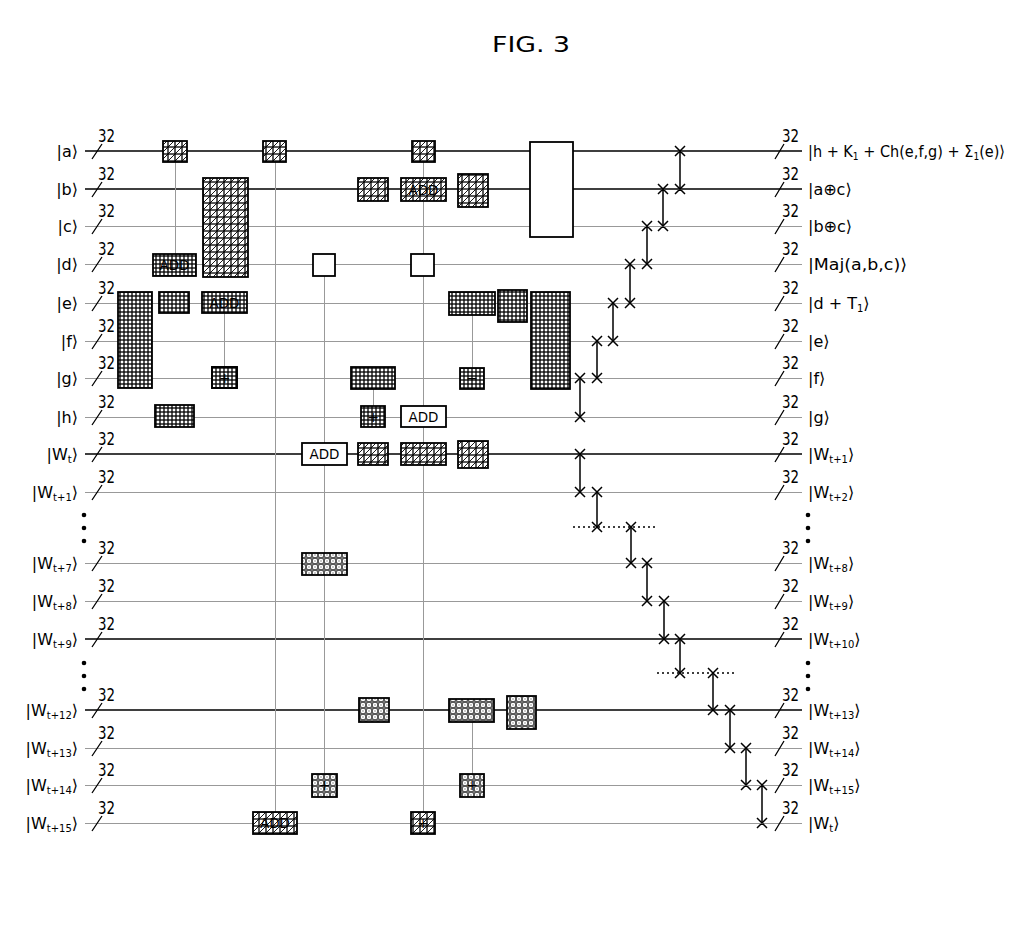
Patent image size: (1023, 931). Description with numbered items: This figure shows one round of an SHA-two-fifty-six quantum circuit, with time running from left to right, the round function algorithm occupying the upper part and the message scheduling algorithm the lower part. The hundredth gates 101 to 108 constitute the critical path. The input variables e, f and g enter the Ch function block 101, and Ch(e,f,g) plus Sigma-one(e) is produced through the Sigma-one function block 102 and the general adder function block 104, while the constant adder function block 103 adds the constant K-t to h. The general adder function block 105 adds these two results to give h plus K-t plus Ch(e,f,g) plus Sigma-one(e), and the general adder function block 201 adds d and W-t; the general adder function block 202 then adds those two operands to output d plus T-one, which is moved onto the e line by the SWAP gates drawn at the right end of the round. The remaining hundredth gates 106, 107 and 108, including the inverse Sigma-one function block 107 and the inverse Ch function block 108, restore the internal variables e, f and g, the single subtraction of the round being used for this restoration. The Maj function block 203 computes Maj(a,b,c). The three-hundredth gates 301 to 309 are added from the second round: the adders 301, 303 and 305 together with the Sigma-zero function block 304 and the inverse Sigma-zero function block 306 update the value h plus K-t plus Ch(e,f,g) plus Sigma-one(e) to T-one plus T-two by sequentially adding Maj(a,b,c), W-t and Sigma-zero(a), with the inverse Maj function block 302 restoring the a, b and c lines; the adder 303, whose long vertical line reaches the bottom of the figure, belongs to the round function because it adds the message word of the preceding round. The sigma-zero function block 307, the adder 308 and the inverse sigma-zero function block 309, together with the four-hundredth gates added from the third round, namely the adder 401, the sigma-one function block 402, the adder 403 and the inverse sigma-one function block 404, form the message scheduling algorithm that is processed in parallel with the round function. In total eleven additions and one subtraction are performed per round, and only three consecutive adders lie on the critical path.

The Ch function block 101 is at (137, 292).
The Sigma-one function block 102 is at (183, 313).
The constant adder function block 103 is at (186, 427).
The general adder function block 104 is at (228, 388).
The general adder function block 105 is at (380, 367).
The hundredth gate (adder/subtractor function block) 106 is at (476, 292).
The Sigma-one inverse function block 107 is at (518, 290).
The Ch inverse function block 108 is at (562, 292).
The general adder function block 201 is at (322, 254).
The general adder function block 202 is at (423, 254).
The Maj function block 203 is at (548, 142).
The adder function block 301 is at (172, 141).
The Maj inverse function block 302 is at (237, 178).
The adder function block 303 is at (273, 141).
The Sigma-zero function block 304 is at (372, 178).
The adder function block 305 is at (420, 141).
The Sigma-zero inverse function block 306 is at (470, 174).
The sigma-zero function block 307 is at (369, 468).
The adder function block 308 is at (409, 468).
The sigma-zero inverse function block 309 is at (470, 468).
The adder function block 401 is at (323, 553).
The sigma-one function block 402 is at (378, 698).
The adder function block 403 is at (472, 699).
The sigma-one inverse function block 404 is at (522, 696).